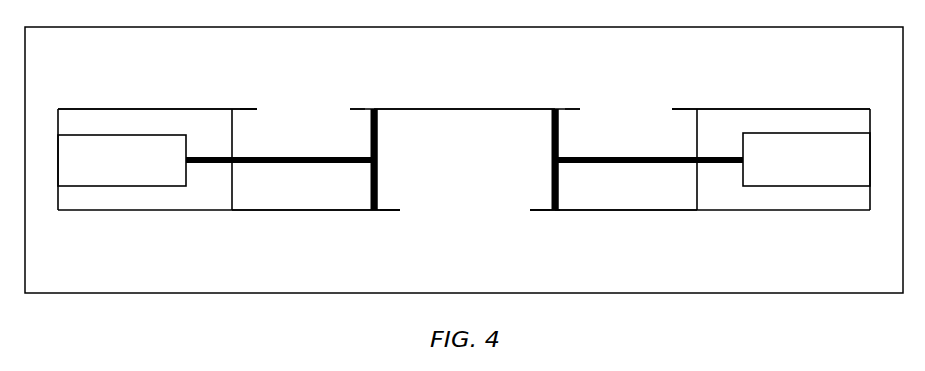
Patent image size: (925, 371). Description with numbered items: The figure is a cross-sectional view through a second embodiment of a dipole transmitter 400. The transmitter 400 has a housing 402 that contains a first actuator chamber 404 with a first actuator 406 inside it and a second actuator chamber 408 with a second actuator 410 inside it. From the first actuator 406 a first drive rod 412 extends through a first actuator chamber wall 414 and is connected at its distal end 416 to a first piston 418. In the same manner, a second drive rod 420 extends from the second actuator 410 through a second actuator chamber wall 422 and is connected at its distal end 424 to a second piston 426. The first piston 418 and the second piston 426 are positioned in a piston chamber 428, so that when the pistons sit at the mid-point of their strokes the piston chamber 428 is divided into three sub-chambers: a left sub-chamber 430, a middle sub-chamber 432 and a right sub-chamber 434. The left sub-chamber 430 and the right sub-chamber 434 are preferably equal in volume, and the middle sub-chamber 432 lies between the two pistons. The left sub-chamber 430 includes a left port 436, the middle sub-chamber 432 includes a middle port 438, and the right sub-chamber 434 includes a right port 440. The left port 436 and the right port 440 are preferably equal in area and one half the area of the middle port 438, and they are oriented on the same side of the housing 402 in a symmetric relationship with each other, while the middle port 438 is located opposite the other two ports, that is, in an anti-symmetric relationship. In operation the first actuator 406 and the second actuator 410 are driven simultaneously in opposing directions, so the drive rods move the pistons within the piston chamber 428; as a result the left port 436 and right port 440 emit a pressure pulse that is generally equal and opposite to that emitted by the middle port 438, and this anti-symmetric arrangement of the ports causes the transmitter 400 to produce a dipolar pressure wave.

The dipole transmitter 400 is at (424, 81).
The housing 402 is at (178, 108).
The first actuator chamber 404 is at (98, 117).
The first actuator 406 is at (142, 170).
The second actuator chamber 408 is at (823, 118).
The second actuator 410 is at (827, 171).
The first drive rod 412 is at (303, 156).
The first actuator chamber wall 414 is at (233, 184).
The distal end of first drive rod 416 is at (372, 154).
The first piston 418 is at (380, 134).
The second drive rod 420 is at (628, 157).
The second actuator chamber wall 422 is at (697, 184).
The distal end of second drive rod 424 is at (559, 156).
The second piston 426 is at (552, 137).
The piston chamber 428 is at (468, 201).
The left sub-chamber 430 is at (358, 198).
The middle sub-chamber 432 is at (486, 171).
The right sub-chamber 434 is at (610, 195).
The left port 436 is at (304, 109).
The middle port 438 is at (528, 196).
The right port 440 is at (627, 108).